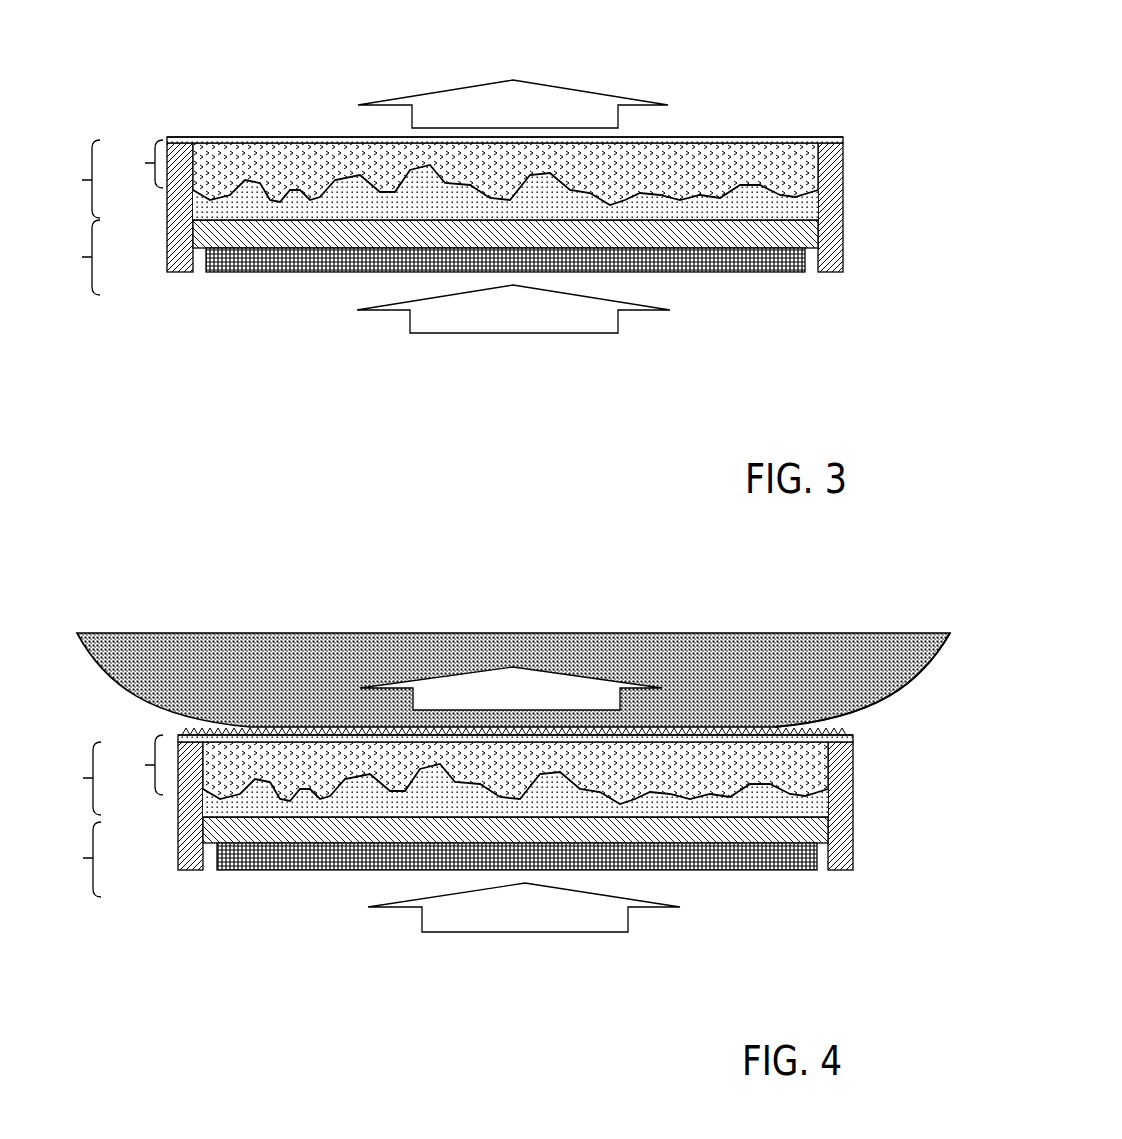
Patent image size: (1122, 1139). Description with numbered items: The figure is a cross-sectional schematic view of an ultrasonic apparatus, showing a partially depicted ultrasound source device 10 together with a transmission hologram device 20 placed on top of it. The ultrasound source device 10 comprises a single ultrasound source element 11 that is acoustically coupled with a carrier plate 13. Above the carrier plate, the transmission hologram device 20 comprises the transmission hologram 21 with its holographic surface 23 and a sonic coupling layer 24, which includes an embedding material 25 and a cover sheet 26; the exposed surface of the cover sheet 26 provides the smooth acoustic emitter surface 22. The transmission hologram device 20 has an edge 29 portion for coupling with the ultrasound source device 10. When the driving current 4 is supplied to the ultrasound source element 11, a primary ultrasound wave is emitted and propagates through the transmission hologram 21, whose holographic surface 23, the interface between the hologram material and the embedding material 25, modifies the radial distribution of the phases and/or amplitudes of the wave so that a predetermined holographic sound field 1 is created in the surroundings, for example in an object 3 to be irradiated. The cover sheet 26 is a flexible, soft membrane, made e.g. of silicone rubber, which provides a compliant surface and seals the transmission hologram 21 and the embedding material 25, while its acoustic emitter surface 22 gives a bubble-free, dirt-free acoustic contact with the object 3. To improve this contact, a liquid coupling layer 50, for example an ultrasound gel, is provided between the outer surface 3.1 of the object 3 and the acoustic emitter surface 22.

In FIG. 3, the holographic sound field 1 is at (513, 104).
In FIG. 4, the holographic sound field 1 is at (511, 688).
In FIG. 3, the driving current 4 is at (513, 309).
In FIG. 4, the driving current 4 is at (524, 907).
In FIG. 4, the object 3 is at (157, 685).
In FIG. 4, the outer surface 3.1 is at (890, 703).
In FIG. 4, the liquid coupling layer 50 is at (180, 725).
In FIG. 3, the ultrasound source device 10 is at (72, 271).
In FIG. 4, the ultrasound source device 10 is at (72, 872).
In FIG. 3, the ultrasound source element 11 is at (750, 258).
In FIG. 4, the ultrasound source element 11 is at (672, 863).
In FIG. 3, the carrier plate 13 is at (237, 233).
In FIG. 4, the carrier plate 13 is at (247, 832).
In FIG. 3, the transmission hologram device 20 is at (72, 194).
In FIG. 4, the transmission hologram device 20 is at (72, 792).
In FIG. 3, the transmission hologram 21 is at (800, 209).
In FIG. 4, the transmission hologram 21 is at (810, 807).
In FIG. 3, the acoustic emitter surface 22 is at (773, 135).
In FIG. 4, the acoustic emitter surface 22 is at (807, 733).
In FIG. 3, the holographic surface 23 is at (663, 197).
In FIG. 4, the holographic surface 23 is at (720, 797).
In FIG. 3, the sonic coupling layer 24 is at (134, 164).
In FIG. 4, the sonic coupling layer 24 is at (133, 765).
In FIG. 3, the embedding material 25 is at (793, 165).
In FIG. 4, the embedding material 25 is at (808, 775).
In FIG. 3, the cover sheet 26 is at (732, 137).
In FIG. 4, the cover sheet 26 is at (853, 738).
In FIG. 3, the edge 29 is at (181, 250).
In FIG. 4, the edge 29 is at (192, 843).